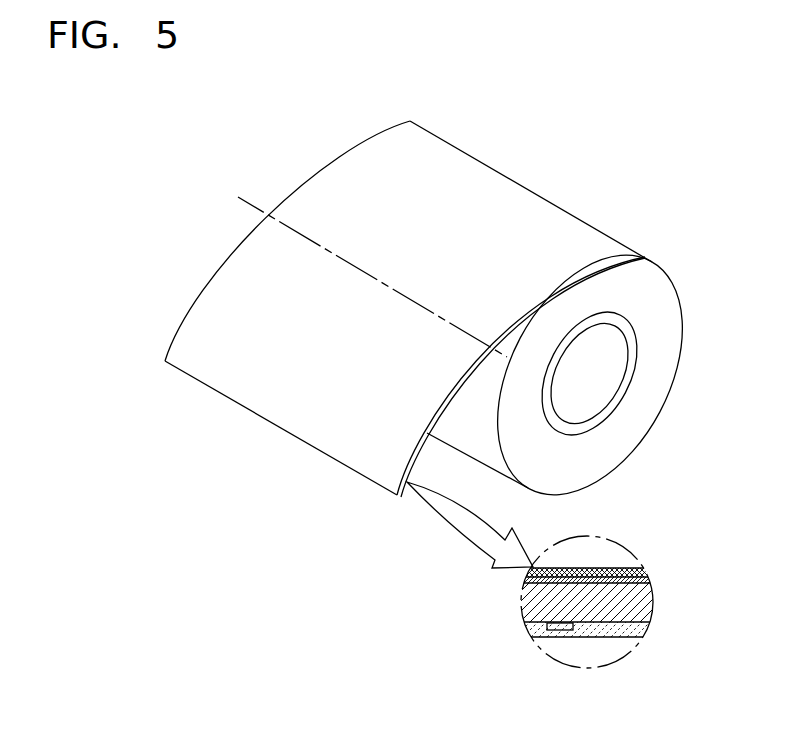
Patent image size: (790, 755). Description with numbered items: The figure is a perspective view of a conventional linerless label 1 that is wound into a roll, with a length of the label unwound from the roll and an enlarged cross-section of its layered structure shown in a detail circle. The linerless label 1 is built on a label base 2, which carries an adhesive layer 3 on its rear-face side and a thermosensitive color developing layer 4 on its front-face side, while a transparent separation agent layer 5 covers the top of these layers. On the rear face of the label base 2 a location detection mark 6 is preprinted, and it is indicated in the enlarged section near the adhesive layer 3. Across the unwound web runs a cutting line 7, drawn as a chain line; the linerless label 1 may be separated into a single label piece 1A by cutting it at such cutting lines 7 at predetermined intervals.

The linerless label 1 is at (541, 152).
The single label piece 1A is at (195, 270).
The label base 2 is at (645, 607).
The adhesive layer 3 is at (643, 632).
The thermosensitive color developing layer 4 is at (647, 581).
The transparent separation agent layer 5 is at (645, 572).
The location detection mark 6 is at (553, 640).
The cutting line 7 is at (255, 200).